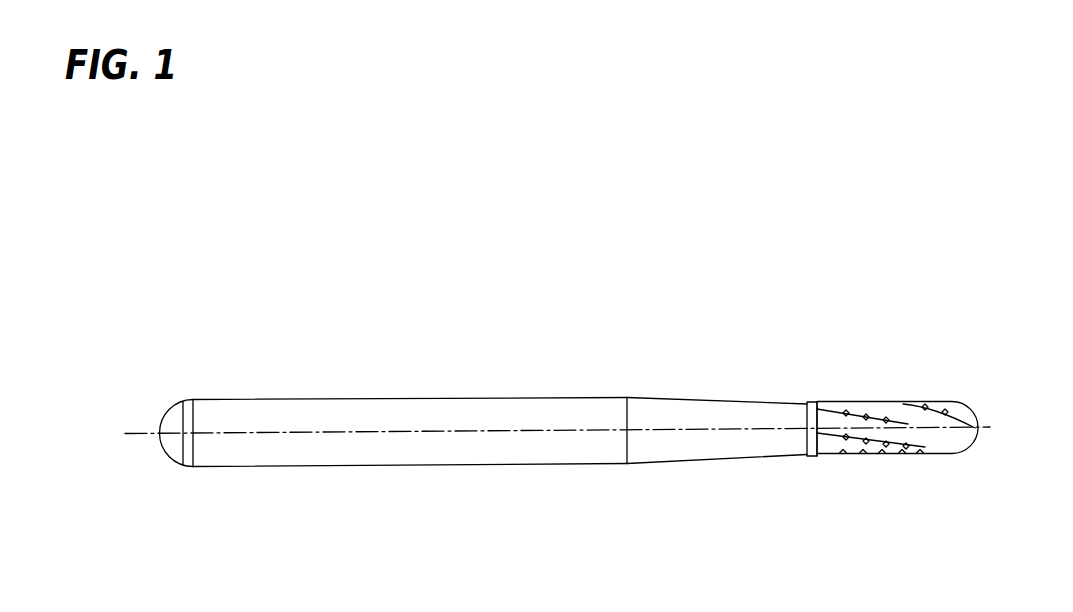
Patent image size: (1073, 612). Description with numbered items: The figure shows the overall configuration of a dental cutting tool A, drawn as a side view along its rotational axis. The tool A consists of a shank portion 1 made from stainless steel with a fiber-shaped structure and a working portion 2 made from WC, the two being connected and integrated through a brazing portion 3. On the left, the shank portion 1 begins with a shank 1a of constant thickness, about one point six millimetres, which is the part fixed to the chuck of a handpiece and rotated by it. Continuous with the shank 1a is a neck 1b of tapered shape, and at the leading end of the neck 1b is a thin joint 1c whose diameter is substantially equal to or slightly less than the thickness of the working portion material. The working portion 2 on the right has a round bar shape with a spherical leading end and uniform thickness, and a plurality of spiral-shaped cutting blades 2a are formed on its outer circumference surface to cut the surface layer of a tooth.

The cutting tool A is at (542, 334).
The shank portion 1 is at (354, 398).
The shank 1a is at (357, 454).
The neck 1b is at (689, 447).
The joint 1c is at (815, 456).
The working portion 2 is at (900, 401).
The cutting blade 2a is at (913, 423).
The brazing portion 3 is at (815, 401).